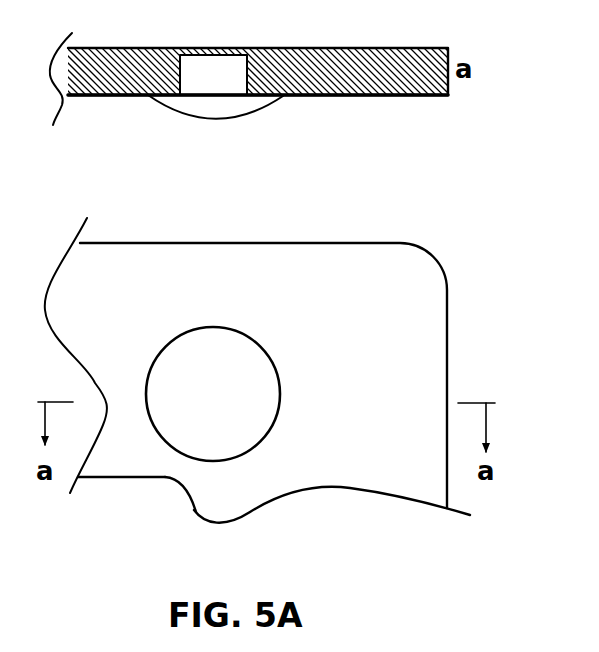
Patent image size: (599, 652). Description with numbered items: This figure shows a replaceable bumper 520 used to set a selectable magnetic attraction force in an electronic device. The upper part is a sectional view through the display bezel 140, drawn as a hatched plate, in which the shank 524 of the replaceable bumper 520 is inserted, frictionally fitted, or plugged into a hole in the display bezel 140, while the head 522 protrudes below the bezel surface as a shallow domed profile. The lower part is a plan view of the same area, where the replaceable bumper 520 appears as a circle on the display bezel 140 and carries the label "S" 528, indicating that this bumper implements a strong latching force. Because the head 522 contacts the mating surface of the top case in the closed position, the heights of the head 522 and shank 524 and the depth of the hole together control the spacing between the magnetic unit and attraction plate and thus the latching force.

The display bezel 140 is at (402, 52).
The replaceable bumper 520 is at (197, 123).
The head 522 is at (254, 117).
The shank 524 is at (226, 62).
The label "S" 528 is at (214, 379).